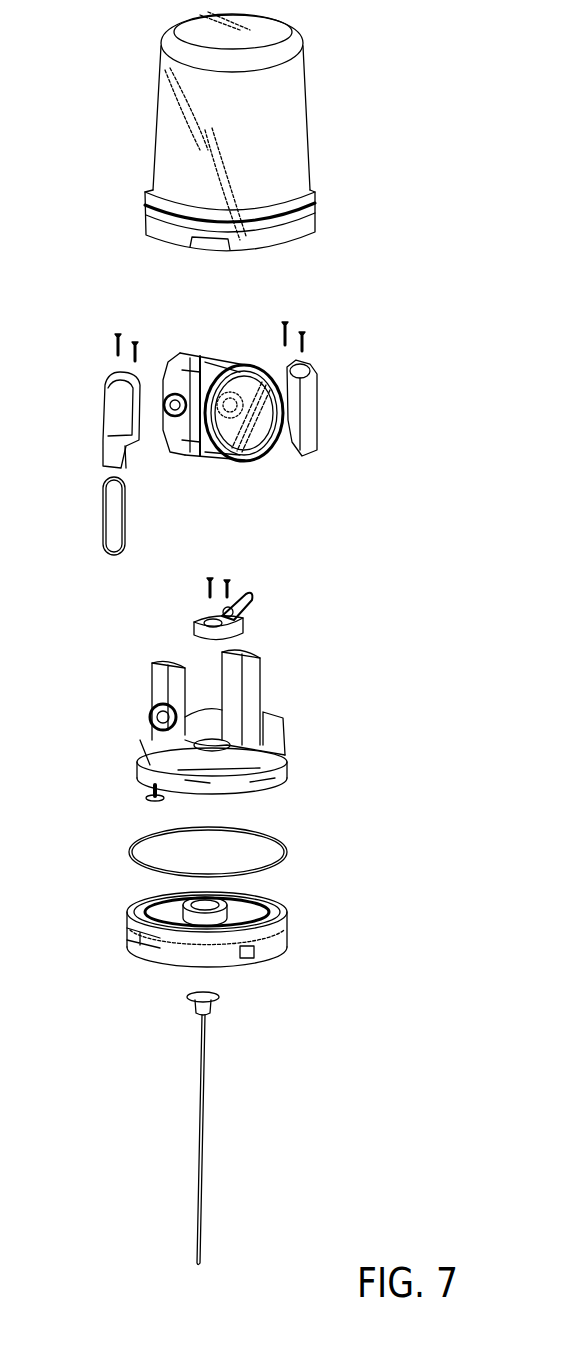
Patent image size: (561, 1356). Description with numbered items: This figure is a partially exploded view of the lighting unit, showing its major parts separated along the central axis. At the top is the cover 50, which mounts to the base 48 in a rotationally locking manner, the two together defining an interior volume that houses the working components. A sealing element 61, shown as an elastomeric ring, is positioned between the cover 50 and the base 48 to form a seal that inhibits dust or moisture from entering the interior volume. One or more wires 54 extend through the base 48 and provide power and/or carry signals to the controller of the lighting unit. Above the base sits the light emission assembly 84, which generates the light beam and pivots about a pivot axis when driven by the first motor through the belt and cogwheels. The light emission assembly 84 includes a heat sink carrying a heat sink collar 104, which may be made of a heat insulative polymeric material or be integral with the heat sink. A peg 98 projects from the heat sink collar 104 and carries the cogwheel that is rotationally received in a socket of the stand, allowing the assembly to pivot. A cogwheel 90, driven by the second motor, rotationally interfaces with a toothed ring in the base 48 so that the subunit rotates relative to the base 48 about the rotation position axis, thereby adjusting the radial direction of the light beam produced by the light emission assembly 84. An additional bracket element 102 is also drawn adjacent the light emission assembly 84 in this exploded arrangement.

The cover 50 is at (293, 118).
The light emission assembly 84 is at (227, 336).
The heat sink collar 104 is at (190, 362).
The bracket 102 is at (300, 370).
The peg 98 is at (185, 445).
The cogwheel 90 is at (150, 793).
The sealing element 61 is at (288, 855).
The base 48 is at (287, 943).
The wires 54 is at (202, 1177).